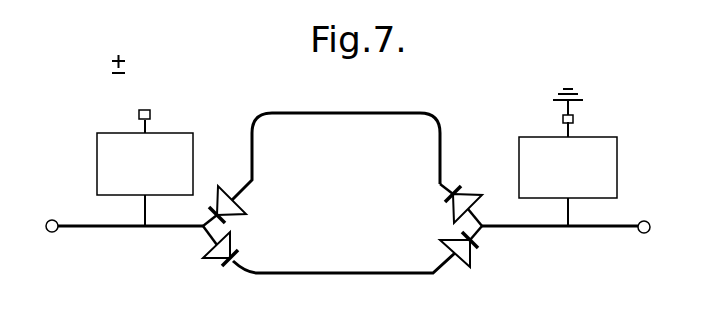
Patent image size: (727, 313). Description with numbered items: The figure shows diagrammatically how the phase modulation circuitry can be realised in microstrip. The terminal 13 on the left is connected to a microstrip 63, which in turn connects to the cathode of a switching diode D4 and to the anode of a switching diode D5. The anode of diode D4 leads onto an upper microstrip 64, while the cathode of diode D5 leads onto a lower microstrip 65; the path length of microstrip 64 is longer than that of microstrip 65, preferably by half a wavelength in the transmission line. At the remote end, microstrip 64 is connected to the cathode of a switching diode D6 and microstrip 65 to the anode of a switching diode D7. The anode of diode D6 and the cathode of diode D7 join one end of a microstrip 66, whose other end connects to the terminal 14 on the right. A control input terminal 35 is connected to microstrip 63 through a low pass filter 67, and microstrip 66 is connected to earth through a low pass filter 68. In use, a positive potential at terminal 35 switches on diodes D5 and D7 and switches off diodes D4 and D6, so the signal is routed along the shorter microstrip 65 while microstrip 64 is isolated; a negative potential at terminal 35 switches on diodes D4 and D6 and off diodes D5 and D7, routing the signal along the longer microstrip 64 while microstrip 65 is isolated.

The terminal 13 is at (51, 236).
The terminal 14 is at (653, 227).
The control input terminal 35 is at (139, 115).
The microstrip 63 is at (112, 228).
The microstrip 64 is at (325, 112).
The microstrip 65 is at (338, 272).
The microstrip 66 is at (535, 228).
The low pass filter 67 is at (97, 162).
The low pass filter 68 is at (617, 148).
The switching diode D4 is at (224, 195).
The switching diode D5 is at (220, 260).
The switching diode D6 is at (461, 194).
The switching diode D7 is at (463, 260).